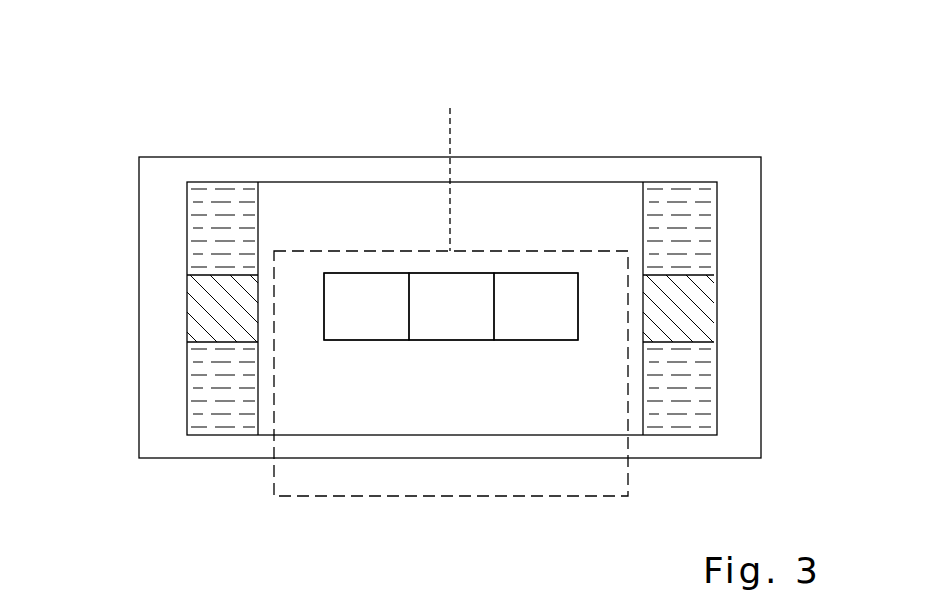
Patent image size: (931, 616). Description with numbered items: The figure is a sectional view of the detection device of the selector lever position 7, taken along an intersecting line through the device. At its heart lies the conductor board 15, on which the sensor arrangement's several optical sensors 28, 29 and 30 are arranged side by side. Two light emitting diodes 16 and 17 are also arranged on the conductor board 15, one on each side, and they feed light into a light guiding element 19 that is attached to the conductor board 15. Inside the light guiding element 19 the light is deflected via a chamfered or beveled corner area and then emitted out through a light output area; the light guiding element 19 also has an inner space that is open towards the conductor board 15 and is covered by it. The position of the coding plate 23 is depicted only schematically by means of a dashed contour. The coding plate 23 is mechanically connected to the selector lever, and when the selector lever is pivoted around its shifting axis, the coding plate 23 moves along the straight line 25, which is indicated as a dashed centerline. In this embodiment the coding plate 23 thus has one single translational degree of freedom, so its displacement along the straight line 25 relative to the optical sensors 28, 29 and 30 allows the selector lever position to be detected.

The detection device of the selector lever position 7 is at (708, 126).
The conductor board 15 is at (348, 168).
The light emitting diode 16 is at (218, 304).
The light emitting diode 17 is at (683, 302).
The light guiding element 19 is at (229, 213).
The coding plate 23 is at (323, 498).
The straight line 25 is at (452, 128).
The optical sensor 28 is at (368, 310).
The optical sensor 29 is at (450, 310).
The optical sensor 30 is at (533, 310).